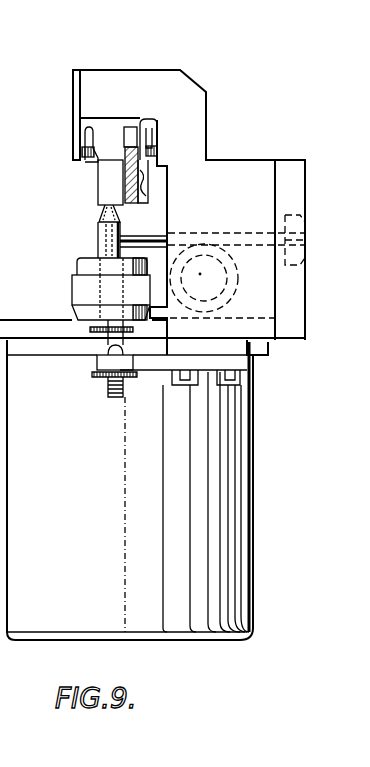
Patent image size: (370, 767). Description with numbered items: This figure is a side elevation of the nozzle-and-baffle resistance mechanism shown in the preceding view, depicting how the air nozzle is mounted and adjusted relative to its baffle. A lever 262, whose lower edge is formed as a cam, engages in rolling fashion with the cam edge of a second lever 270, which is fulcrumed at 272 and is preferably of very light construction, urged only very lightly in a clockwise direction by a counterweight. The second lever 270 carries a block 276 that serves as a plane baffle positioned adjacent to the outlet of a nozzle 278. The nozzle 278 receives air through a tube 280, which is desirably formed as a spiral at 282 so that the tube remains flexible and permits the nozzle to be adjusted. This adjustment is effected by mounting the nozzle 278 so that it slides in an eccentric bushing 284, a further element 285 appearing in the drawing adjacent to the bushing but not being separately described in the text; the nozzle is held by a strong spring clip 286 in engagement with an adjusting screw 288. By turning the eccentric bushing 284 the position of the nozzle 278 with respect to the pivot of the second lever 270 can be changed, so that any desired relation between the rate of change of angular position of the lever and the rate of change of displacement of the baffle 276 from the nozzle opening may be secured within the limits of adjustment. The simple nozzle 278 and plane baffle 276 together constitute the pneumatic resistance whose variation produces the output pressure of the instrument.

The lever 262 is at (128, 132).
The second lever 270 is at (145, 188).
The fulcrum 272 is at (142, 121).
The block 276 is at (112, 187).
The nozzle 278 is at (105, 237).
The tube 280 is at (150, 233).
The spiral 282 is at (219, 300).
The eccentric bushing 284 is at (88, 294).
The lock nut 285 is at (78, 266).
The spring clip 286 is at (95, 377).
The adjusting screw 288 is at (128, 398).